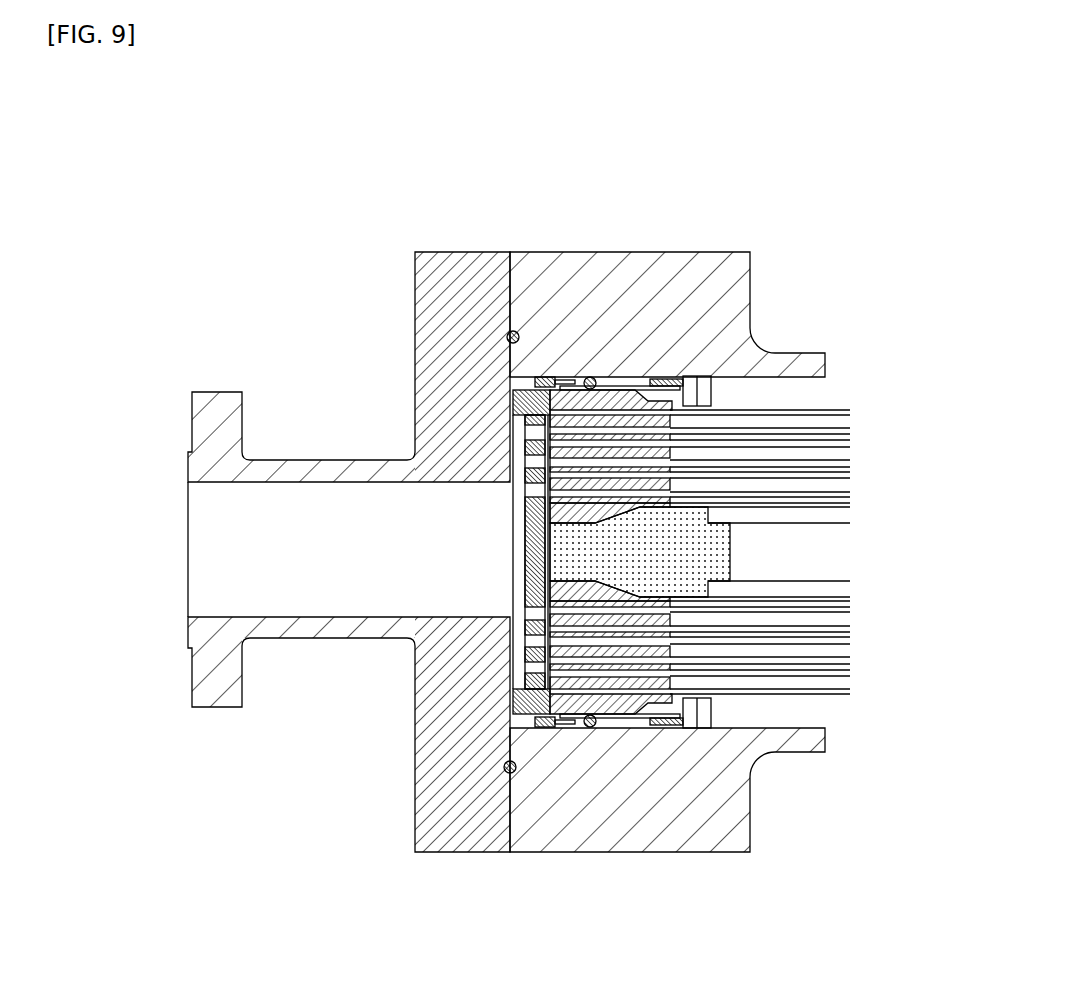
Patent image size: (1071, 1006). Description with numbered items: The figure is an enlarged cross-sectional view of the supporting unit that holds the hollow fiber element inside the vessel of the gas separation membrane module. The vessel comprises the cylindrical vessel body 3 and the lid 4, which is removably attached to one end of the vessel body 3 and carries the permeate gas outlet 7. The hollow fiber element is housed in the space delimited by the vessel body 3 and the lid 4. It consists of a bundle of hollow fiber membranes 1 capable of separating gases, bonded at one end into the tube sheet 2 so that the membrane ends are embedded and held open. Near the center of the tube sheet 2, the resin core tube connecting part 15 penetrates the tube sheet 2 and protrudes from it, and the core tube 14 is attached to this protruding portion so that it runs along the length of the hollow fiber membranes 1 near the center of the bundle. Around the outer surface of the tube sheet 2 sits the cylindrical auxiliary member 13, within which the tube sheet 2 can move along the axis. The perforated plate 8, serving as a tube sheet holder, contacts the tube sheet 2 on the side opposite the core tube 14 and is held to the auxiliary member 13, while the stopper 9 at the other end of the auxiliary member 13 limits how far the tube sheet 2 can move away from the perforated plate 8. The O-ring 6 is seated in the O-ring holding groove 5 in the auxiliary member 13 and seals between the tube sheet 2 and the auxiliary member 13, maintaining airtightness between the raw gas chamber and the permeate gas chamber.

The hollow fiber membranes 1 is at (822, 697).
The tube sheet 2 is at (617, 398).
The vessel body 3 is at (652, 827).
The lid 4 is at (442, 750).
The O-ring holding groove 5 is at (597, 722).
The O-ring 6 is at (582, 722).
The permeate gas outlet 7 is at (227, 530).
The perforated plate 8 is at (513, 395).
The stopper 9 is at (710, 376).
The auxiliary member 13 is at (628, 377).
The core tube 14 is at (803, 507).
The core tube connecting part 15 is at (673, 568).